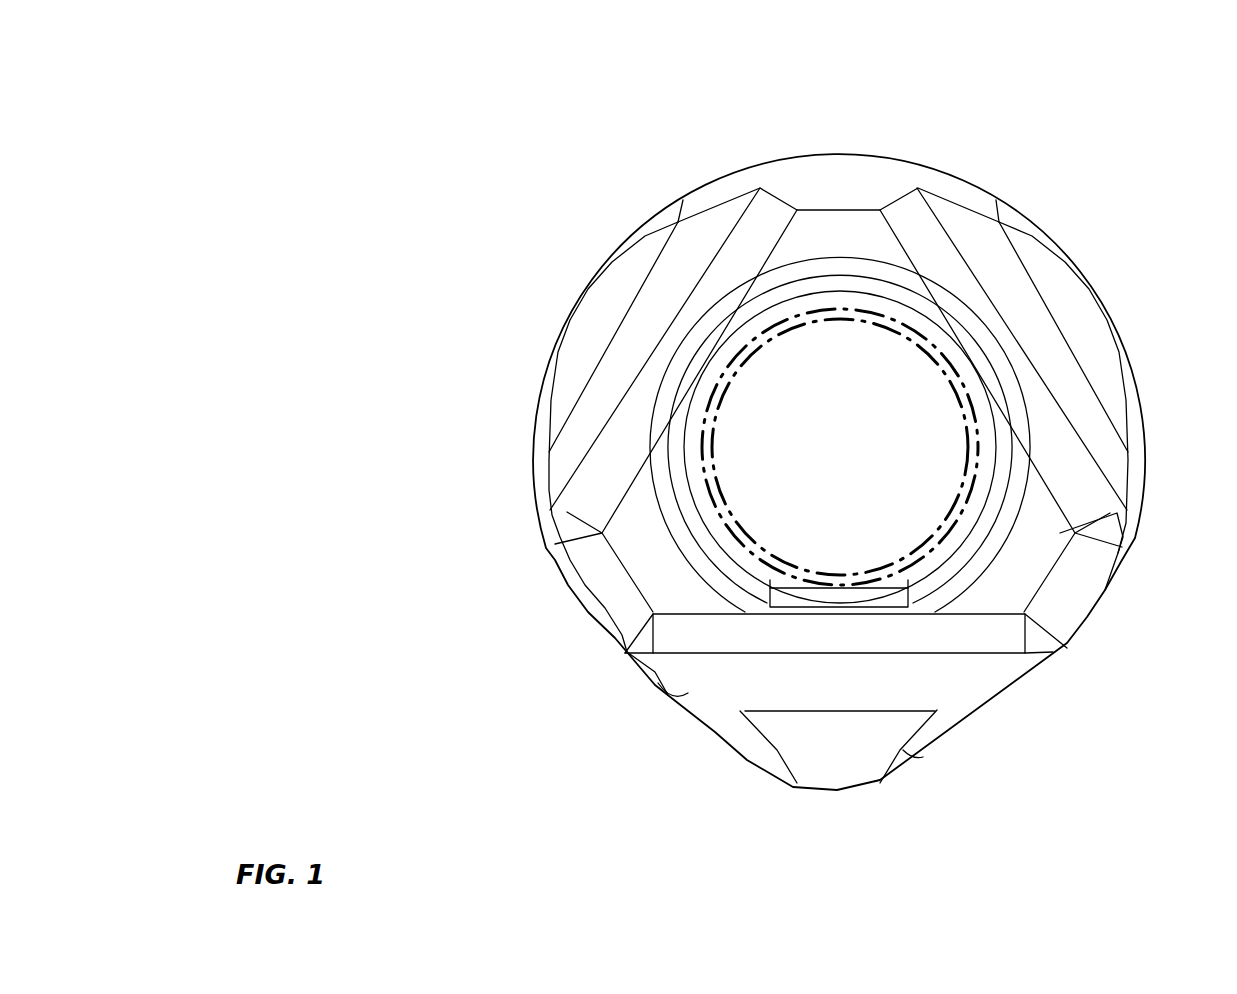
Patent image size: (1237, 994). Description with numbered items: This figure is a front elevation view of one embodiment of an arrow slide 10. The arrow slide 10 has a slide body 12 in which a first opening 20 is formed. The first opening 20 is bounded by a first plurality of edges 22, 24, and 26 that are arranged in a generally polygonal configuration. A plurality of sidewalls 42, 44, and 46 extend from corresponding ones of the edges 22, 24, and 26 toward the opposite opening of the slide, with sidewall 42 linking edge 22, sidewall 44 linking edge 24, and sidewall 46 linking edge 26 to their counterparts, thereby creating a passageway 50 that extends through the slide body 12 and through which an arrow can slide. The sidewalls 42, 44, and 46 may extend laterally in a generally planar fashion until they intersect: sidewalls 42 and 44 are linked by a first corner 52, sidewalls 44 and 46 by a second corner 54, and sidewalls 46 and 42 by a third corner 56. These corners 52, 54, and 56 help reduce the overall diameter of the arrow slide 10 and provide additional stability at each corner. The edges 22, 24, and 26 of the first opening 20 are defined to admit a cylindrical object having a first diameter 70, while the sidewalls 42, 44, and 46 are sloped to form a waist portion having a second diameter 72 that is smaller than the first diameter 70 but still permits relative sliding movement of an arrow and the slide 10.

The arrow slide 10 is at (1086, 240).
The slide body 12 is at (979, 185).
The first opening 20 is at (950, 615).
The edge 22 is at (860, 607).
The edge 24 is at (980, 377).
The edge 26 is at (693, 367).
The sidewall 42 is at (793, 590).
The sidewall 44 is at (980, 407).
The sidewall 46 is at (727, 373).
The passageway 50 is at (753, 476).
The first corner 52 is at (990, 547).
The second corner 54 is at (847, 257).
The third corner 56 is at (713, 507).
The first diameter 70 is at (707, 510).
The second diameter 72 is at (775, 337).